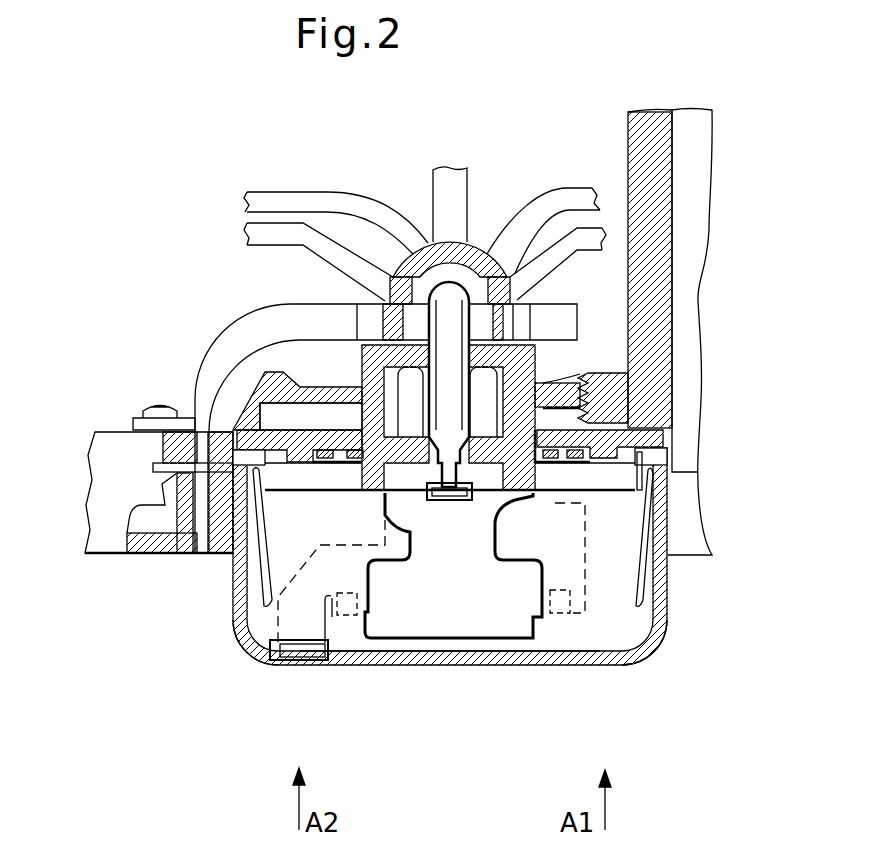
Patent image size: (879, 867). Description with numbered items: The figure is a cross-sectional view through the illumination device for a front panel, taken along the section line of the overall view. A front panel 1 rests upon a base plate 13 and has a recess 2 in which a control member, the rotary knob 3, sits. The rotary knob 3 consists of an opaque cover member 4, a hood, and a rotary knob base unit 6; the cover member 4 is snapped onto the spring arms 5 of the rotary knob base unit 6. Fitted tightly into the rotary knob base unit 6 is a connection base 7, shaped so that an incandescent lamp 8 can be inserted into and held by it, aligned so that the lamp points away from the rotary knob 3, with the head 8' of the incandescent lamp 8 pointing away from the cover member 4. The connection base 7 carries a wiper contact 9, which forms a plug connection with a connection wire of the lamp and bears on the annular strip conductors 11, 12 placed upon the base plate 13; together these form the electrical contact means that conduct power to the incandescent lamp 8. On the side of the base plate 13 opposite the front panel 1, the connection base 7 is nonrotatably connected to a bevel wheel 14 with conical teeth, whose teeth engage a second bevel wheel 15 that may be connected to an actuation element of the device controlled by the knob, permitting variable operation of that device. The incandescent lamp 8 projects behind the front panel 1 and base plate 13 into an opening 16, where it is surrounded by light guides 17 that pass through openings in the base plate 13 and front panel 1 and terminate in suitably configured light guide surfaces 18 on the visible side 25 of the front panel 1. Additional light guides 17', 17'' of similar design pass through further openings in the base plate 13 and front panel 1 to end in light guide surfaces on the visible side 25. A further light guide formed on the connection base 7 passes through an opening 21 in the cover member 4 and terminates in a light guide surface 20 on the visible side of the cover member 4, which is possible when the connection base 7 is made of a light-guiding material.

The front panel 1 is at (110, 512).
The recess 2 is at (663, 553).
The rotary knob 3 is at (441, 683).
The cover member 4 is at (257, 658).
The spring arms 5 is at (261, 603).
The rotary knob base unit 6 is at (610, 540).
The connection base 7 is at (508, 600).
The incandescent lamp 8 is at (392, 382).
The head of the incandescent lamp 8' is at (436, 233).
The wiper contact 9 is at (452, 500).
The annular strip conductor 11 is at (580, 448).
The annular strip conductor 12 is at (552, 455).
The base plate 13 is at (670, 438).
The bevel wheel 14 is at (255, 395).
The bevel wheel 15 is at (653, 203).
The opening 16 is at (481, 318).
The light guides 17 is at (261, 352).
The additional light guide 17' is at (396, 254).
The additional light guide 17'' is at (422, 193).
The light guide surfaces 18 is at (200, 555).
The light guide surface 20 is at (295, 660).
The opening 21 is at (330, 665).
The visible side 25 is at (123, 555).